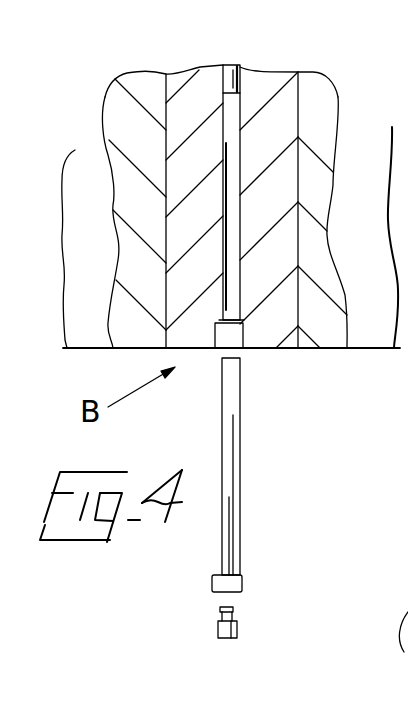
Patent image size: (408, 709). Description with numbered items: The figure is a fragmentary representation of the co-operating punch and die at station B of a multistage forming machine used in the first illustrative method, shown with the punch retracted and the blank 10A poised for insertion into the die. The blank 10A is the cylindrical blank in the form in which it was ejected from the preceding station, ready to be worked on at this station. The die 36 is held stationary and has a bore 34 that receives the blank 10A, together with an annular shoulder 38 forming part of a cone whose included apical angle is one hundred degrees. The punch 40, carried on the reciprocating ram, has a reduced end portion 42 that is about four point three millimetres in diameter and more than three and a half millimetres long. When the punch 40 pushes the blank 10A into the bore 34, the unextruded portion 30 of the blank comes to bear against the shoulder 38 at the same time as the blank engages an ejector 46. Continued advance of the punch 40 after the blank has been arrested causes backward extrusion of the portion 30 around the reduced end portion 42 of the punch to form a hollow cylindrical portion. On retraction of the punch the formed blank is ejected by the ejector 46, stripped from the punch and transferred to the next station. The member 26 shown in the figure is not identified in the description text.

The blank 10A is at (286, 519).
The shaft 26 is at (235, 390).
The unextruded portion 30 is at (233, 582).
The bore 34 is at (240, 214).
The die 36 is at (275, 128).
The annular shoulder 38 is at (243, 333).
The punch 40 is at (228, 642).
The reduced end portion 42 is at (233, 610).
The ejector 46 is at (233, 72).